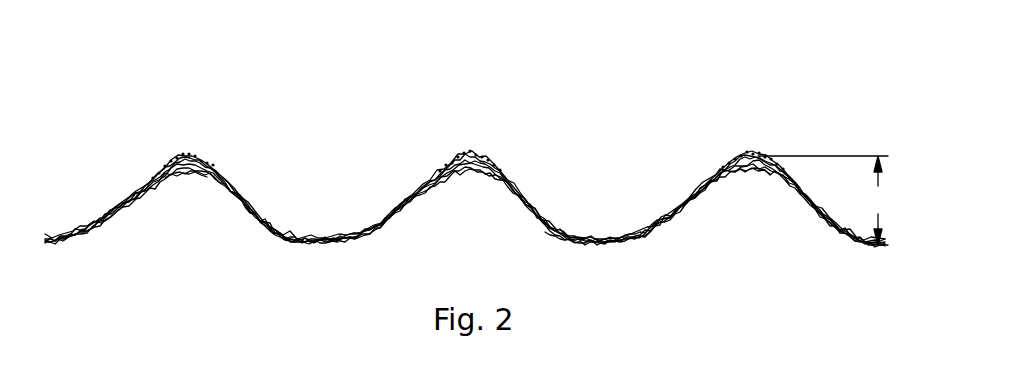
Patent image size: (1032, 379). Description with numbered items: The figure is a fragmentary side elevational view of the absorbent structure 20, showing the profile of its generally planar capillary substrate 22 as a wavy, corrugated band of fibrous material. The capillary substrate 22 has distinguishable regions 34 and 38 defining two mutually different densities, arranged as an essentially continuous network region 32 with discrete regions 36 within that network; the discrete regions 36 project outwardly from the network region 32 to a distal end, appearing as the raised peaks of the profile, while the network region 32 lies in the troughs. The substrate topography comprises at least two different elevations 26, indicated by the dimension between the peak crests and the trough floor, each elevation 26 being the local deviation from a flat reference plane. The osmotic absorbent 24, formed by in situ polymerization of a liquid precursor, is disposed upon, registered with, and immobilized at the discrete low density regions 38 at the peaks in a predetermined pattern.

The absorbent structure 20 is at (318, 112).
The capillary substrate 22 is at (318, 245).
The osmotic absorbent 24 is at (183, 158).
The elevation 26 is at (827, 200).
The essentially continuous network region 32 is at (598, 240).
The region of differing density 34 is at (558, 238).
The discrete region 36 is at (757, 178).
The discrete low density region 38 is at (185, 172).